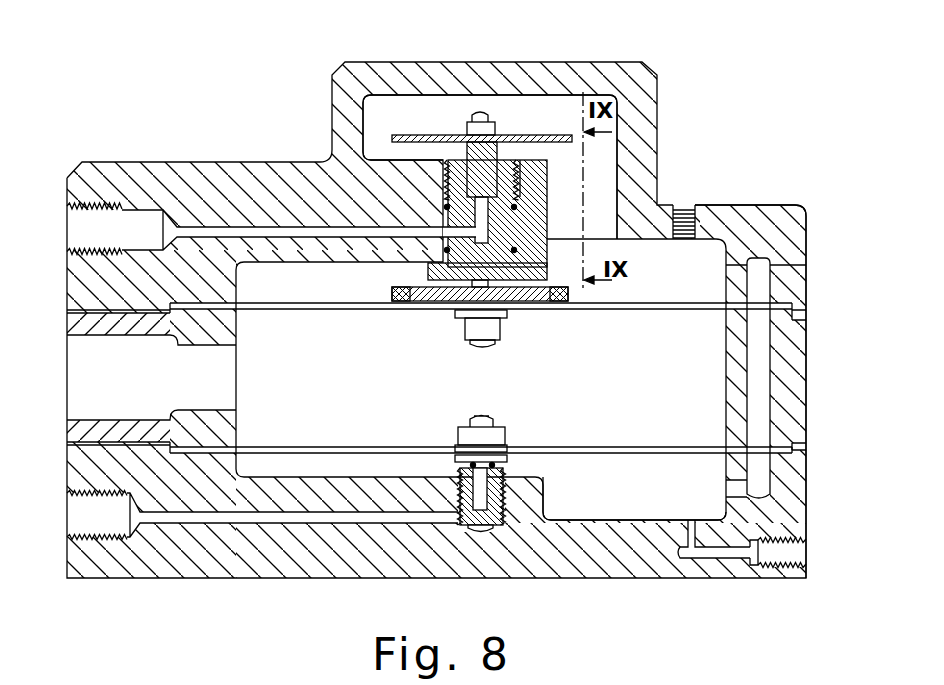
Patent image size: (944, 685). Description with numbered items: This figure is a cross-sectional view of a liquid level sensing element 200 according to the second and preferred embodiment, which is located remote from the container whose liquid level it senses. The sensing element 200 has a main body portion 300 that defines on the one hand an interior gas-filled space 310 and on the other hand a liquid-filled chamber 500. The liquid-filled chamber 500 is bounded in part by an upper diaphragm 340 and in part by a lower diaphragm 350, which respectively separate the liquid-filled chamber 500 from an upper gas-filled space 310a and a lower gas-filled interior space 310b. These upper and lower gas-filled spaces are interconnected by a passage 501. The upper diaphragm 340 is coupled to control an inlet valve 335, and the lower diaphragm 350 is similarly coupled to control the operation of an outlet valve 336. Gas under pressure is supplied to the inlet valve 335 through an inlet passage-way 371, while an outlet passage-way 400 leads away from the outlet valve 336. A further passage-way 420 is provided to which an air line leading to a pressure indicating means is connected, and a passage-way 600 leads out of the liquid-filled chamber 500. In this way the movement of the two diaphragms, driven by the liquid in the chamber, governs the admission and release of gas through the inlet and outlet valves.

The sensing element 200 is at (659, 111).
The main body portion 300 is at (745, 226).
The interior gas-filled space 310 is at (519, 129).
The upper gas-filled space 310a is at (403, 103).
The lower gas-filled interior space 310b is at (567, 510).
The inlet valve 335 is at (437, 183).
The outlet valve 336 is at (478, 465).
The upper diaphragm 340 is at (662, 308).
The lower diaphragm 350 is at (657, 452).
The inlet passage-way 371 is at (137, 218).
The outlet passage-way 400 is at (212, 520).
The passage-way 420 is at (735, 560).
The liquid-filled chamber 500 is at (433, 393).
The passage 501 is at (753, 373).
The passage-way 600 is at (217, 383).